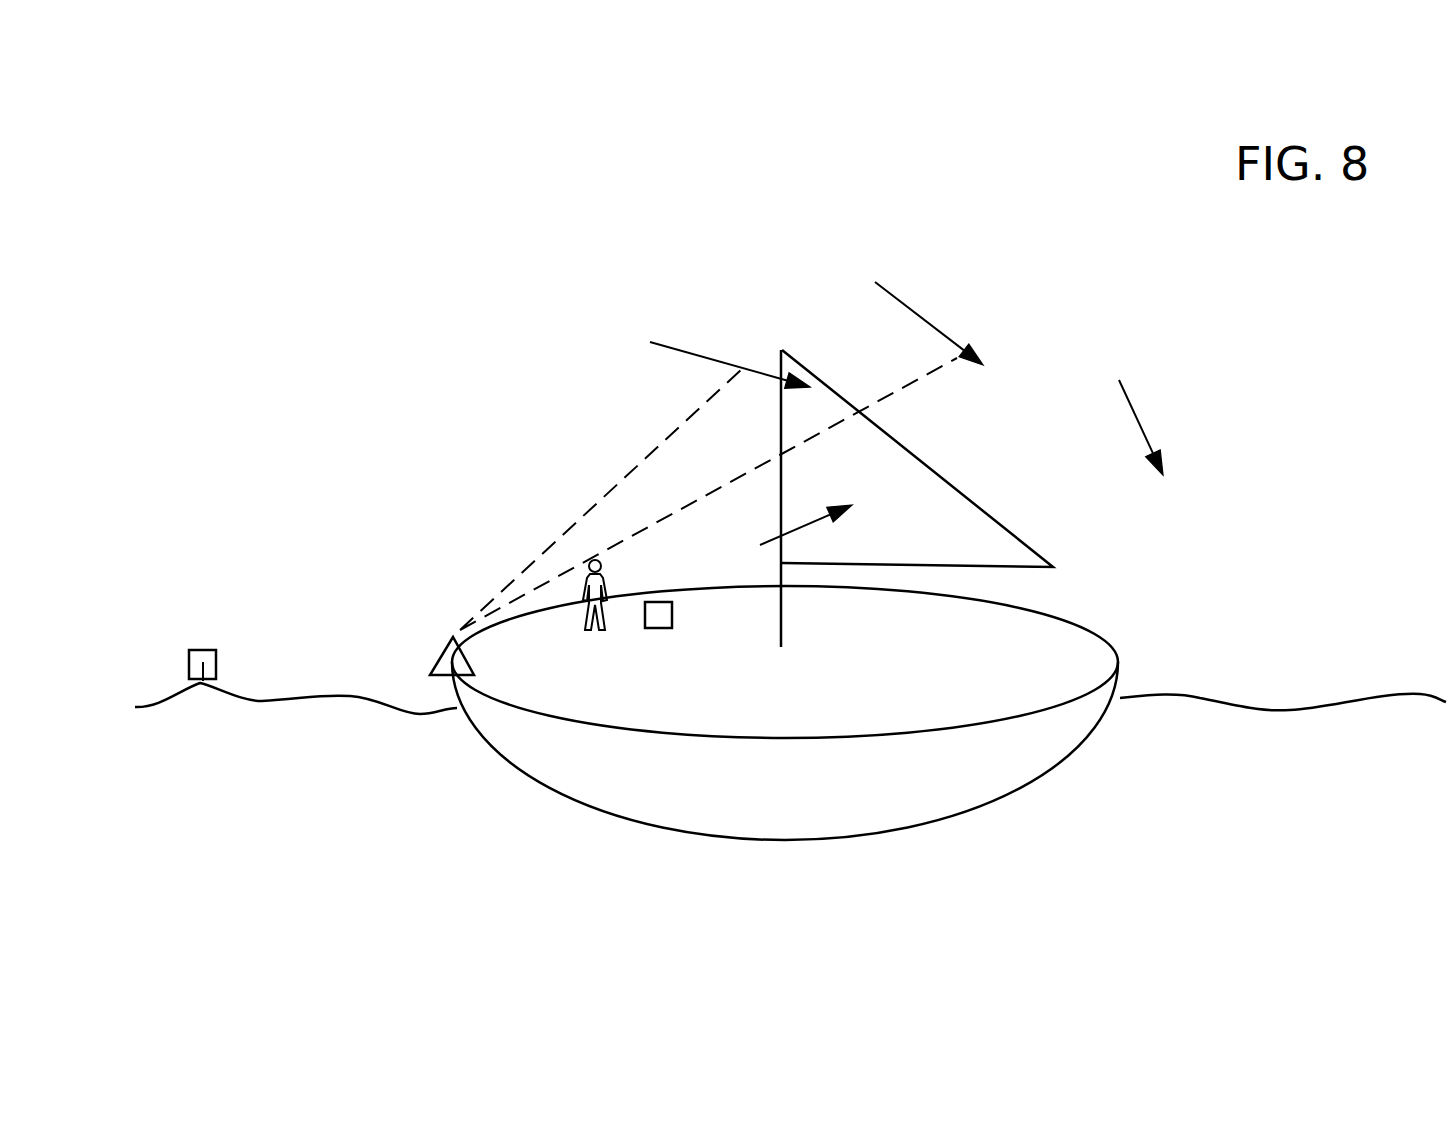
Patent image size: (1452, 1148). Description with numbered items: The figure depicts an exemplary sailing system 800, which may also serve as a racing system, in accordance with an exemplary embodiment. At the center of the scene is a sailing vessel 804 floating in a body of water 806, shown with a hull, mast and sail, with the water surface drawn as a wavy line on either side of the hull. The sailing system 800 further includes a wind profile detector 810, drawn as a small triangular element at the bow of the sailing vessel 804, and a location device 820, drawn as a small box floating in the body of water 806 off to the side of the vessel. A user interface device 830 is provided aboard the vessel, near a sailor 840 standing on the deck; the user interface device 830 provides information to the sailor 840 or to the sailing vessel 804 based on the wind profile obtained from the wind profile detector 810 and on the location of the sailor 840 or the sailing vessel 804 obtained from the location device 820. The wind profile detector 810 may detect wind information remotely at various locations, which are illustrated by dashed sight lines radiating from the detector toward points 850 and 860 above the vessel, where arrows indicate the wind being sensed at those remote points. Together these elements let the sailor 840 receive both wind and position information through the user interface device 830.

The sailing system 800 is at (512, 321).
The sailing vessel 804 is at (873, 710).
The body of water 806 is at (1260, 710).
The wind profile detector 810 is at (443, 659).
The location device 820 is at (203, 681).
The user interface device 830 is at (657, 615).
The sailor 840 is at (607, 595).
The point 850 is at (741, 369).
The point 860 is at (962, 345).